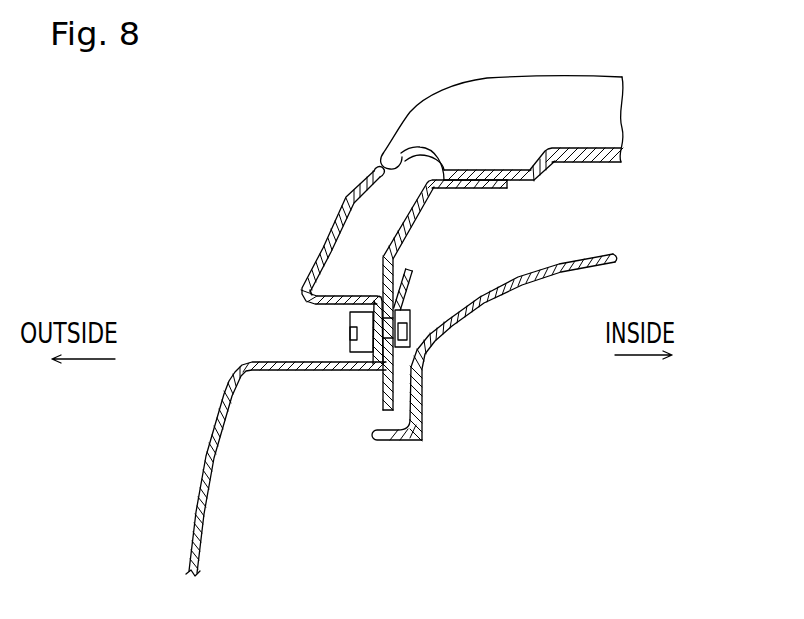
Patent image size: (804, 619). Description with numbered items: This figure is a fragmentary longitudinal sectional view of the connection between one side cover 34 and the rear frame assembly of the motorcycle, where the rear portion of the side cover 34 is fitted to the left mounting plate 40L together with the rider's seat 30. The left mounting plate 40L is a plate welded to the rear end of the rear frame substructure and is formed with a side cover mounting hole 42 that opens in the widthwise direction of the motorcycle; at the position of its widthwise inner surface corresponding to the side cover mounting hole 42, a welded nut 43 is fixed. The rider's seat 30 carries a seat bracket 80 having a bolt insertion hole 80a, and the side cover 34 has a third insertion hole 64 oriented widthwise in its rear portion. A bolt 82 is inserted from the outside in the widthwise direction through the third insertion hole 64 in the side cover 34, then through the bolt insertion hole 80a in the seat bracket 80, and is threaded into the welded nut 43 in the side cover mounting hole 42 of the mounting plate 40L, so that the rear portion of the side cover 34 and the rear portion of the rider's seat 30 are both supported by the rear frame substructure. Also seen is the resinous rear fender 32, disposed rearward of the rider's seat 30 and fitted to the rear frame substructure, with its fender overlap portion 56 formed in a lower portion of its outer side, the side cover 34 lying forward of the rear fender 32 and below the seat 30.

The rider's seat 30 is at (470, 102).
The seat bracket 80 is at (412, 225).
The bolt insertion hole 80a is at (410, 334).
The left mounting plate 40L is at (385, 409).
The third insertion hole 64 is at (357, 351).
The bolt 82 is at (352, 323).
The welded nut 43 is at (414, 327).
The side cover mounting hole 42 is at (410, 316).
The rear fender 32 is at (588, 252).
The fender overlap portion 56 is at (380, 441).
The side cover 34 is at (203, 464).